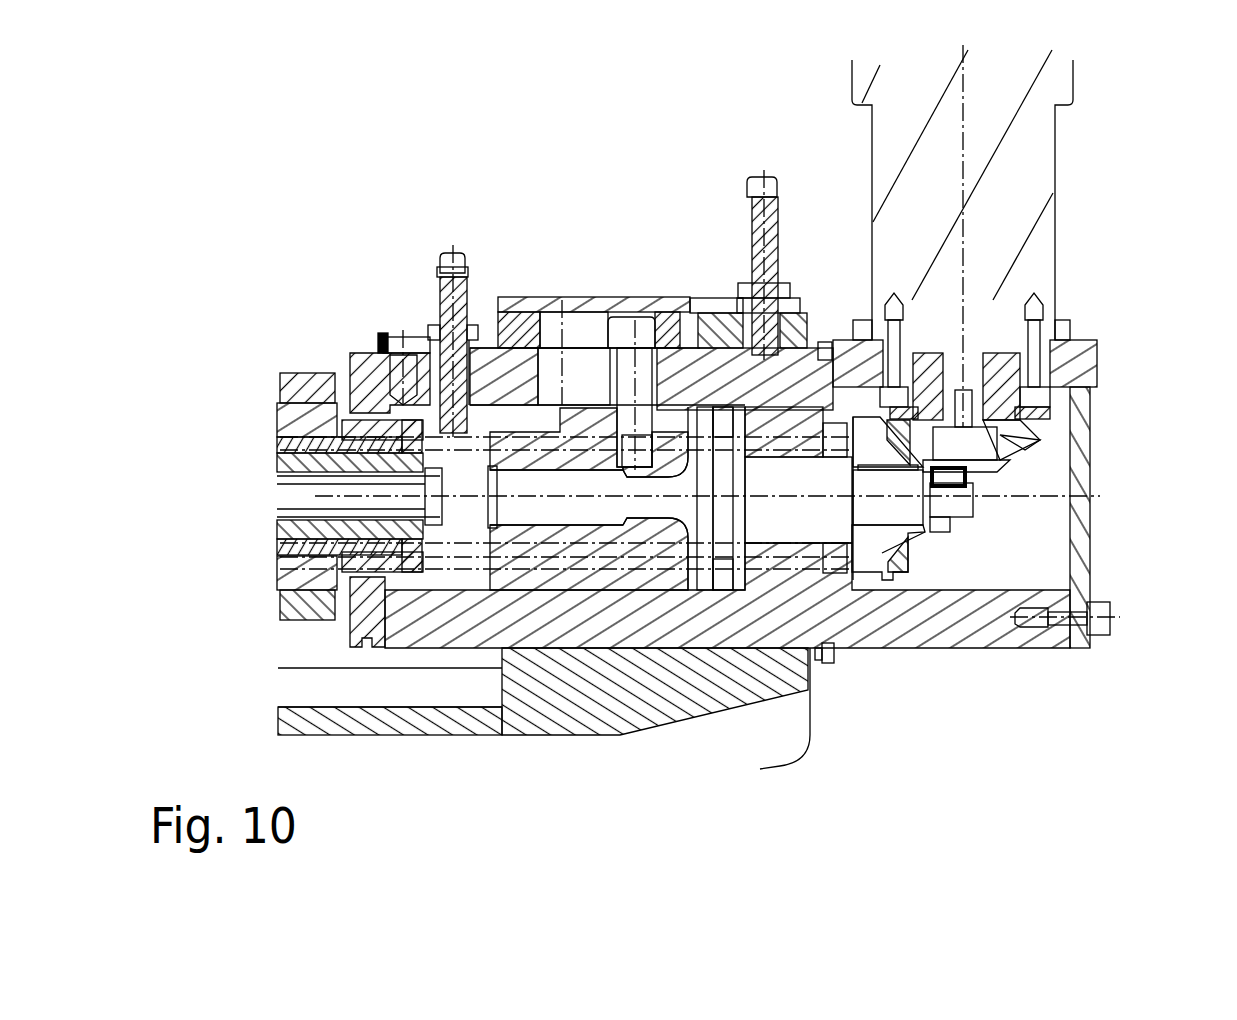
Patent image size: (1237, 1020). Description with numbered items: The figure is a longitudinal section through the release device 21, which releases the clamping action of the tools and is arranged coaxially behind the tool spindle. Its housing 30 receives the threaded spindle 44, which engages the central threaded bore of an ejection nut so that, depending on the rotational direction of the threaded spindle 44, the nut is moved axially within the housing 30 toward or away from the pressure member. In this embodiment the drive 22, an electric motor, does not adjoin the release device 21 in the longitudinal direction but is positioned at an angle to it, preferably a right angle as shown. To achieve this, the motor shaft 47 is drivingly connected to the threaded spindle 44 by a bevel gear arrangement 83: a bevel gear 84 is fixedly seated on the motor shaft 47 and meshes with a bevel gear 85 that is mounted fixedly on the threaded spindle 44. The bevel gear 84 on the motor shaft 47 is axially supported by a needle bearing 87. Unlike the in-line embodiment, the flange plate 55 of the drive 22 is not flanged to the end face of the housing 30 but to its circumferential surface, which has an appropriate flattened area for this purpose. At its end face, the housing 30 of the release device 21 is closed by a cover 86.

The release device 21 is at (657, 260).
The drive 22 is at (1028, 222).
The housing 30 is at (500, 370).
The threaded spindle 44 is at (788, 518).
The motor shaft 47 is at (975, 372).
The flange plate 55 is at (1068, 363).
The bevel gear arrangement 83 is at (1013, 473).
The bevel gear 84 is at (1010, 445).
The bevel gear 85 is at (908, 548).
The cover 86 is at (1077, 543).
The needle bearing 87 is at (1005, 437).